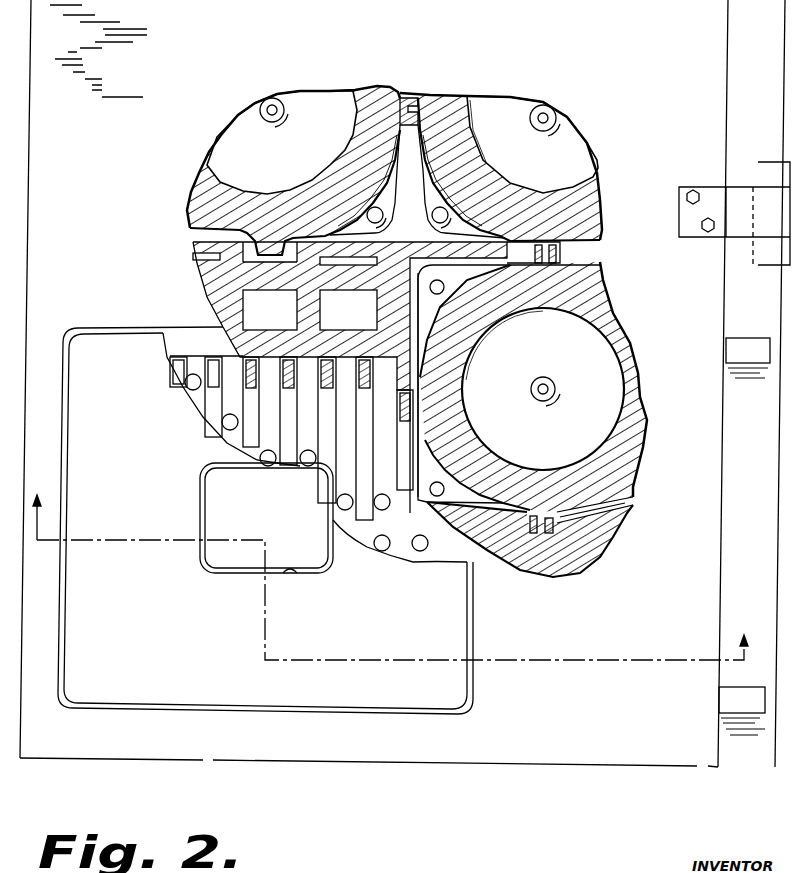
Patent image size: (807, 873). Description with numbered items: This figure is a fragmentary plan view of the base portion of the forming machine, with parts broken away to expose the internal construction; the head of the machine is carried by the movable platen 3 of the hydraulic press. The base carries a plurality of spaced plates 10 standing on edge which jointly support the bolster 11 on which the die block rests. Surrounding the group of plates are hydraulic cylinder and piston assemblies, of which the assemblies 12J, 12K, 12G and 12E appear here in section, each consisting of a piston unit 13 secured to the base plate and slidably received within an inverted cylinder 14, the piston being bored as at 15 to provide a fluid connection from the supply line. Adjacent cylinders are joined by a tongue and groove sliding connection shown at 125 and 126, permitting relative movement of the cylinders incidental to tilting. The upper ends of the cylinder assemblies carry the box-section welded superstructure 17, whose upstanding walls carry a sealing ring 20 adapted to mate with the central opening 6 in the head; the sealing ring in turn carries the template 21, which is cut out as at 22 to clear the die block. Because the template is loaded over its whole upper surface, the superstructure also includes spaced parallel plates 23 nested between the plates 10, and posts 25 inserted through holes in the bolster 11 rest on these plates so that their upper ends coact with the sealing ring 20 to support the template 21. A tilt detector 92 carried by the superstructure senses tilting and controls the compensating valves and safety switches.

The superstructure assembly 17 is at (98, 51).
The tilt detector 92 is at (762, 216).
The movable platen 3 is at (390, 592).
The template 21 is at (265, 520).
The sealing ring 20 is at (177, 333).
The bolster 11 is at (195, 410).
The spaced parallel plates 23 is at (267, 430).
The posts 25 is at (420, 551).
The central opening 6 is at (266, 518).
The template cutout 22 is at (291, 574).
The spaced plates 10 is at (238, 386).
The hydraulic cylinder and piston assembly 12J is at (405, 72).
The hydraulic cylinder and piston assembly 12K is at (470, 80).
The hydraulic cylinder and piston assembly 12G is at (550, 392).
The piston unit 13 is at (556, 441).
The piston bore 15 is at (565, 377).
The inverted cylinder 14 is at (610, 465).
The hydraulic cylinder and piston assembly 12E is at (597, 566).
The tongue and groove connection 126 is at (528, 522).
The tongue and groove connection 125 is at (555, 524).